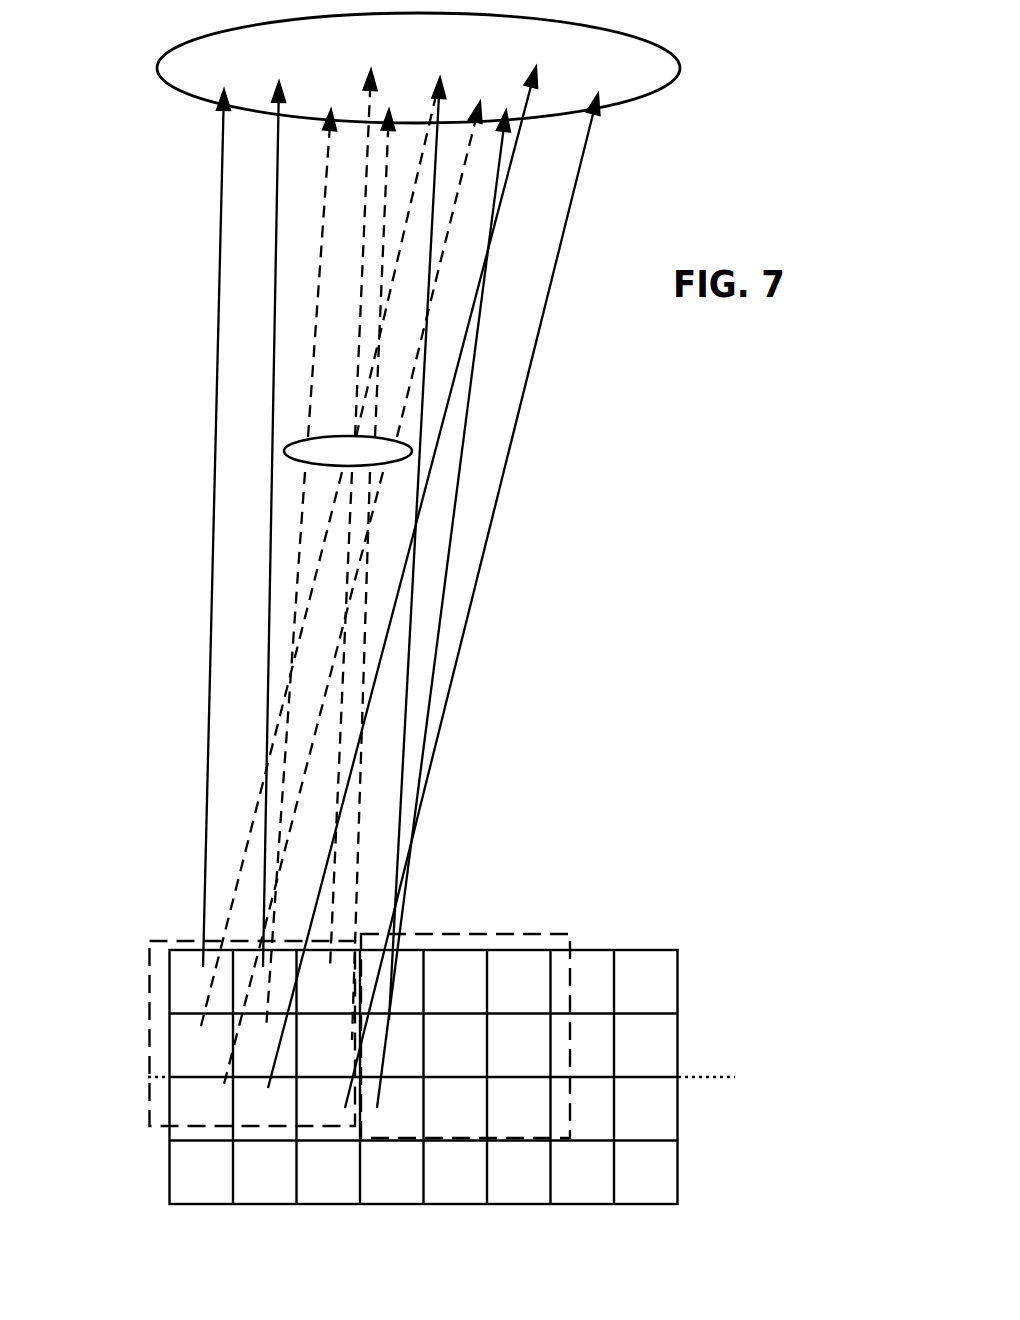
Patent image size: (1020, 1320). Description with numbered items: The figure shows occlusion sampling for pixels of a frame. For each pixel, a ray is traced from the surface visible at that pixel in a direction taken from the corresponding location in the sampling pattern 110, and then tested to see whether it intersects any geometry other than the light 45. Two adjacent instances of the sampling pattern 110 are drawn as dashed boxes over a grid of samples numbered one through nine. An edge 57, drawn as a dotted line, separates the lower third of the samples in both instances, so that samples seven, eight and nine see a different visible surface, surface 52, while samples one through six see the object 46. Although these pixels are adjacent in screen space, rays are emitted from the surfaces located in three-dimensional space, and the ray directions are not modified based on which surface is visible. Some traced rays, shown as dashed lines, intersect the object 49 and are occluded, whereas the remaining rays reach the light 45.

The light 45 is at (624, 122).
The object 49 is at (396, 462).
The object 46 is at (176, 967).
The surface 52 is at (176, 1108).
The edge 57 is at (683, 1078).
The sampling pattern 110 is at (182, 941).